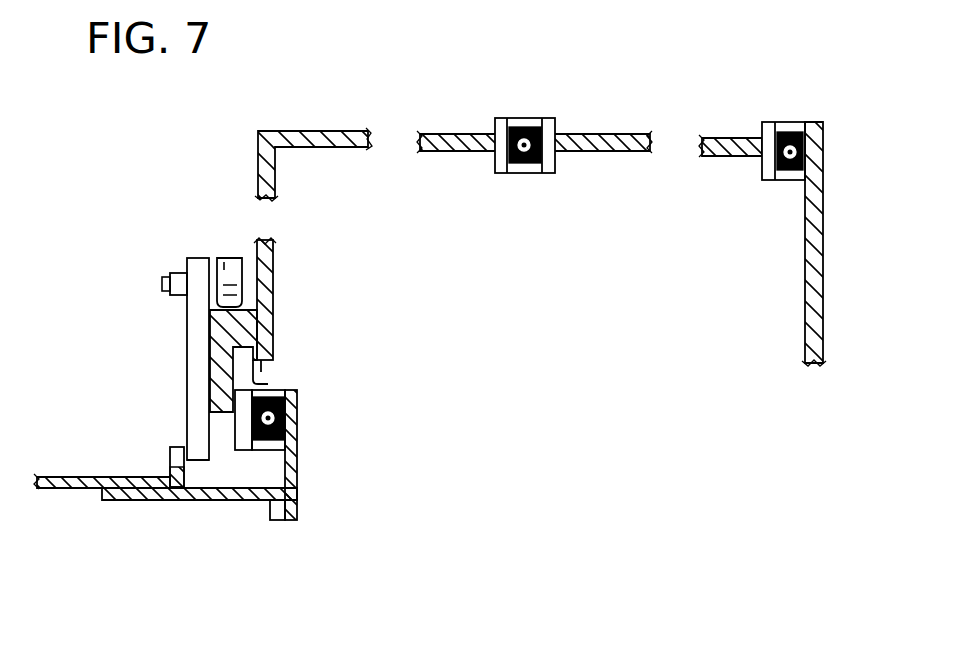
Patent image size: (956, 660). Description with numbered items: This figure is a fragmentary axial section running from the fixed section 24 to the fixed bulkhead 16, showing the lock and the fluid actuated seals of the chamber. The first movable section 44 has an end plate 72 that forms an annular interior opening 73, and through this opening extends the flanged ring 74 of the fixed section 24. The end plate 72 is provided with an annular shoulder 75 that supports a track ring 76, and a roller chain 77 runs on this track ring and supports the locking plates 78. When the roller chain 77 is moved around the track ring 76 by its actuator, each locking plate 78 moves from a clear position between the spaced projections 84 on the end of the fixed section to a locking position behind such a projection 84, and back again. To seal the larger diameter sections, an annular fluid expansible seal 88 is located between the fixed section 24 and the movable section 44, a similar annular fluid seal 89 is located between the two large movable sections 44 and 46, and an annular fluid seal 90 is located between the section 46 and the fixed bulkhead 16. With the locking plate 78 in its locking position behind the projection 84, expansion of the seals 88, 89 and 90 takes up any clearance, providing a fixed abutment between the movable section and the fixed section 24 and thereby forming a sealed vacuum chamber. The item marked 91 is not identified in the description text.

The fixed bulkhead 16 is at (838, 266).
The fixed section 24 is at (56, 468).
The first section 44 is at (442, 126).
The second large movable section 46 is at (733, 138).
The end plate 72 is at (283, 253).
The annular interior opening 73 is at (245, 455).
The flanged ring 74 is at (243, 500).
The annular shoulder 75 is at (268, 384).
The track ring 76 is at (256, 310).
The roller chain 77 is at (233, 262).
The locking plate 78 is at (196, 390).
The spaced projection 84 is at (170, 456).
The annular fluid expansible seal 88 is at (283, 420).
The annular fluid seal 89 is at (530, 125).
The annular fluid seal 90 is at (806, 165).
The fastener 91 is at (197, 463).